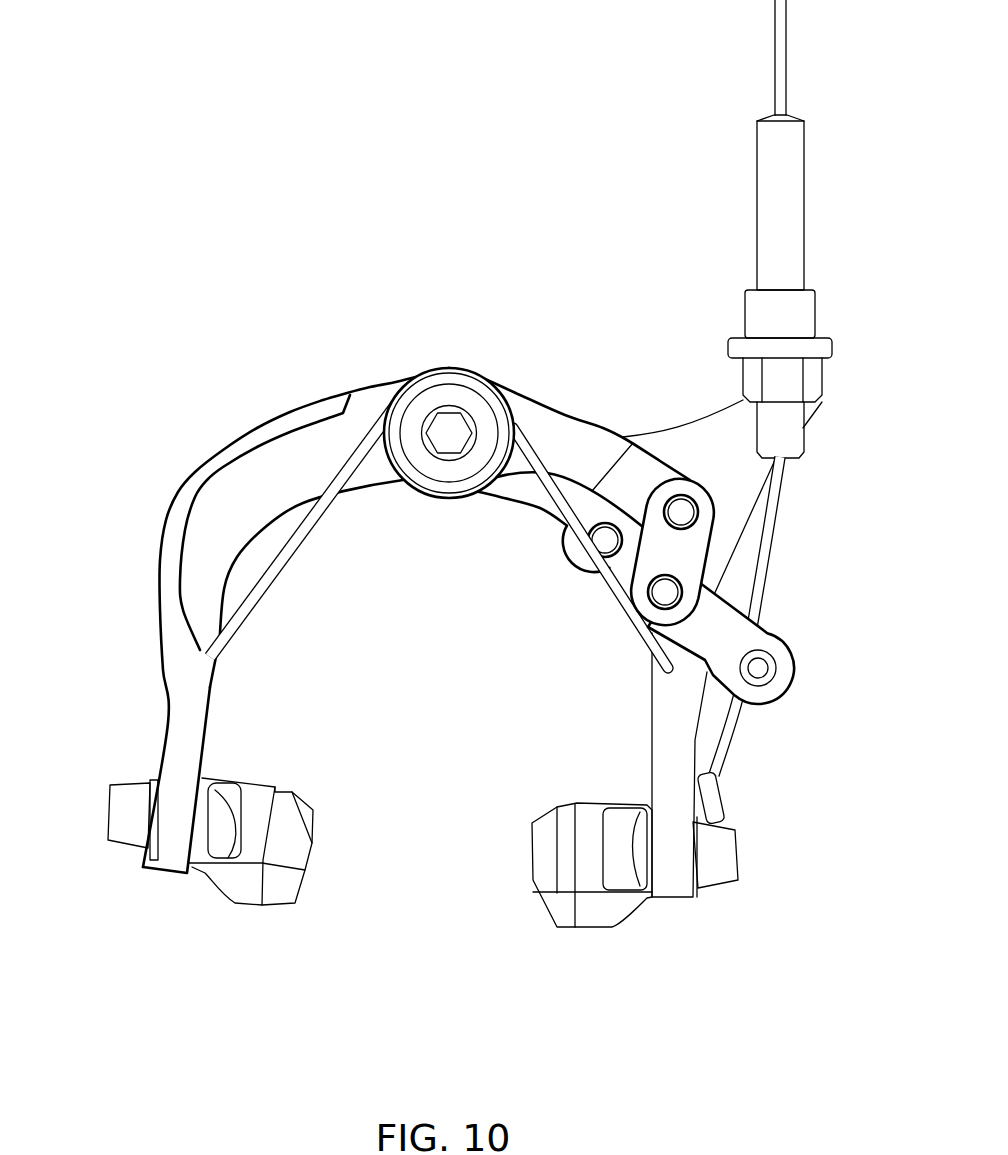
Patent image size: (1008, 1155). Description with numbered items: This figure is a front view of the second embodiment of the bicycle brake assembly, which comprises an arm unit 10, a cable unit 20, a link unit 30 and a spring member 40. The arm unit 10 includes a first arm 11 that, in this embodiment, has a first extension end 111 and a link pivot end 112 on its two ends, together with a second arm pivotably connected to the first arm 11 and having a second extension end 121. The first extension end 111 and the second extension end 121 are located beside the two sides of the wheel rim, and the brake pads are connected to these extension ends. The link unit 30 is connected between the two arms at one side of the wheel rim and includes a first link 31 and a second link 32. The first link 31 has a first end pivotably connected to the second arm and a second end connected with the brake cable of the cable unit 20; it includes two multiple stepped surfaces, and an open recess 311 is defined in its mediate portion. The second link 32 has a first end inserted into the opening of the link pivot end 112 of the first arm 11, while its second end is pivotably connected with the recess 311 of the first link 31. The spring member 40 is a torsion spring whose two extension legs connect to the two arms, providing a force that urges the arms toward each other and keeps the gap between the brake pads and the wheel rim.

The arm unit 10 is at (240, 348).
The first arm 11 is at (222, 500).
The first extension end 111 is at (178, 752).
The link pivot end 112 is at (676, 494).
The second extension end 121 is at (680, 803).
The cable unit 20 is at (710, 197).
The link unit 30 is at (737, 535).
The first link 31 is at (783, 680).
The recess 311 is at (713, 623).
The second link 32 is at (691, 557).
The spring member 40 is at (254, 613).